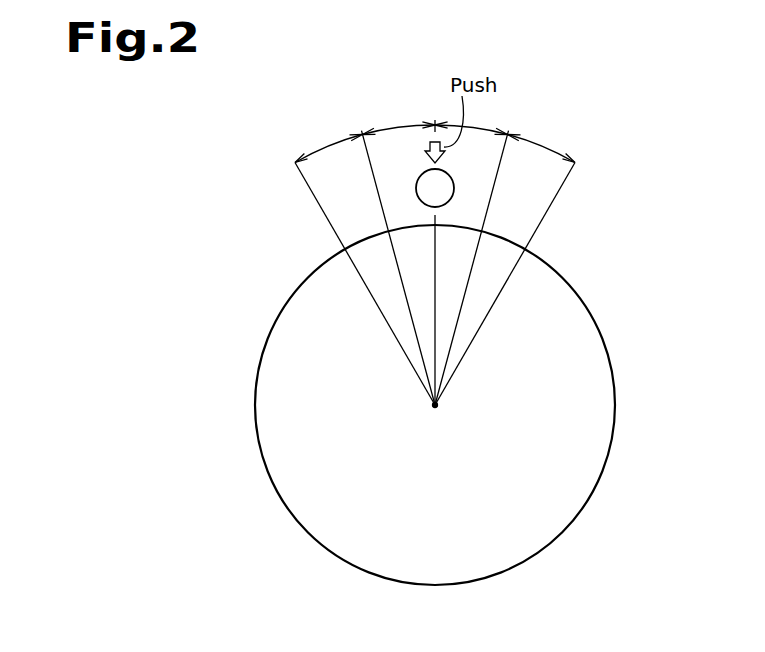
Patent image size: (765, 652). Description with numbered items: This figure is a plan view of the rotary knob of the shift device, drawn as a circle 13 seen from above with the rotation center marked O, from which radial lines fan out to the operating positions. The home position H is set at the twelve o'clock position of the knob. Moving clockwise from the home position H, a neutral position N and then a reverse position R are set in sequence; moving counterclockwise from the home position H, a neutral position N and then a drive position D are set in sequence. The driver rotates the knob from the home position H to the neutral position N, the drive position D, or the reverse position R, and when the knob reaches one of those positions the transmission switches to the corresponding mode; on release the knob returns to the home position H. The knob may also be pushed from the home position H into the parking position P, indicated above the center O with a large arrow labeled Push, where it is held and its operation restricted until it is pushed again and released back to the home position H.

The rotary dial 13 is at (591, 308).
The rotation center O is at (437, 406).
The parking position P is at (435, 188).
The home position H is at (435, 250).
The neutral position N is at (435, 254).
The drive position D is at (358, 271).
The reverse position R is at (512, 269).